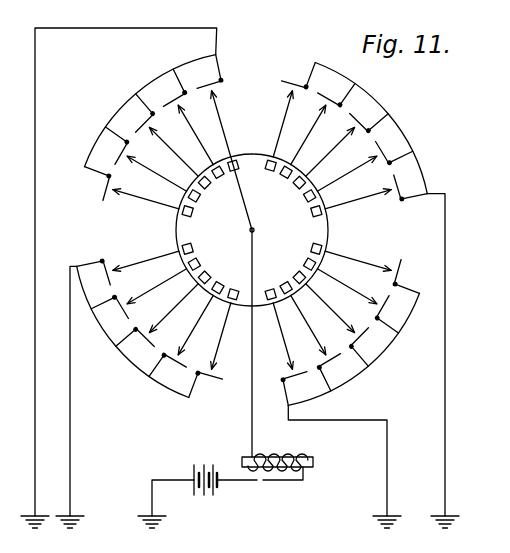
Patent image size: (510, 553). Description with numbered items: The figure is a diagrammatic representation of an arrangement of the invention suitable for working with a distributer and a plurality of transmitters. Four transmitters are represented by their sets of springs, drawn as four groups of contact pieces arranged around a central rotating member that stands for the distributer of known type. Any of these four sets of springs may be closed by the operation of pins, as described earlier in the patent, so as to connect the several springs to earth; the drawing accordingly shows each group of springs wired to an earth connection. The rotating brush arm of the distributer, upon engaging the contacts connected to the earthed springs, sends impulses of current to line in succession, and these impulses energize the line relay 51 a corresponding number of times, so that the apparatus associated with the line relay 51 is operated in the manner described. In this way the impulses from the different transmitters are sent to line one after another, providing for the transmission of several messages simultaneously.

The line relay 51 is at (282, 453).